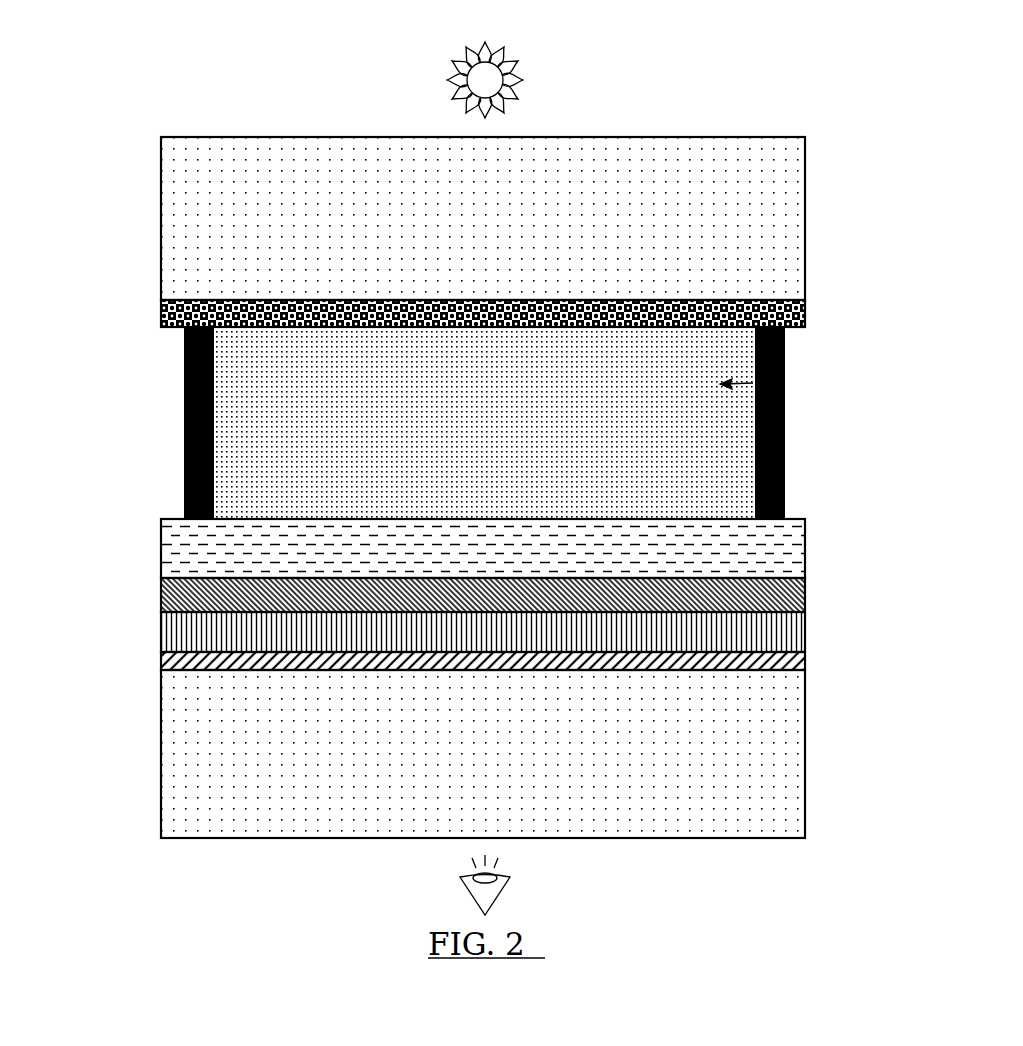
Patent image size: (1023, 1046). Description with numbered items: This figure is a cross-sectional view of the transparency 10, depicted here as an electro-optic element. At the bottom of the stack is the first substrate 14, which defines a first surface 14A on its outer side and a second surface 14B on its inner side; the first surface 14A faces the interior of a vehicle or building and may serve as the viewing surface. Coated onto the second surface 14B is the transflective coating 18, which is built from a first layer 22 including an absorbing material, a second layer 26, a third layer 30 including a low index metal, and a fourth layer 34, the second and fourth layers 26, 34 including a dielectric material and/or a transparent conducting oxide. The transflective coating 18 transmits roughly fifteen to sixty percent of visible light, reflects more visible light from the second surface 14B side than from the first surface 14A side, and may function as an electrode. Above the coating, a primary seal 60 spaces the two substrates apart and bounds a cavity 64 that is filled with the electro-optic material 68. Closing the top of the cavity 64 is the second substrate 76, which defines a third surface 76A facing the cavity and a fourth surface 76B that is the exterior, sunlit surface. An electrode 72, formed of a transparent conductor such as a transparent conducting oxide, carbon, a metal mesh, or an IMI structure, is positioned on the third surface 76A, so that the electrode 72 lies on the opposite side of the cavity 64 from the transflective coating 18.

The transparency 10 is at (944, 158).
The first substrate 14 is at (767, 762).
The first surface 14A is at (347, 838).
The second surface 14B is at (161, 670).
The transflective coating 18 is at (150, 522).
The first layer 22 is at (806, 665).
The second layer 26 is at (806, 637).
The third layer 30 is at (806, 600).
The fourth layer 34 is at (806, 551).
The primary seal 60 is at (785, 413).
The cavity 64 is at (785, 368).
The electro-optic material 68 is at (680, 457).
The electrode 72 is at (783, 315).
The second substrate 76 is at (786, 217).
The third surface 76A is at (161, 300).
The fourth surface 76B is at (161, 137).